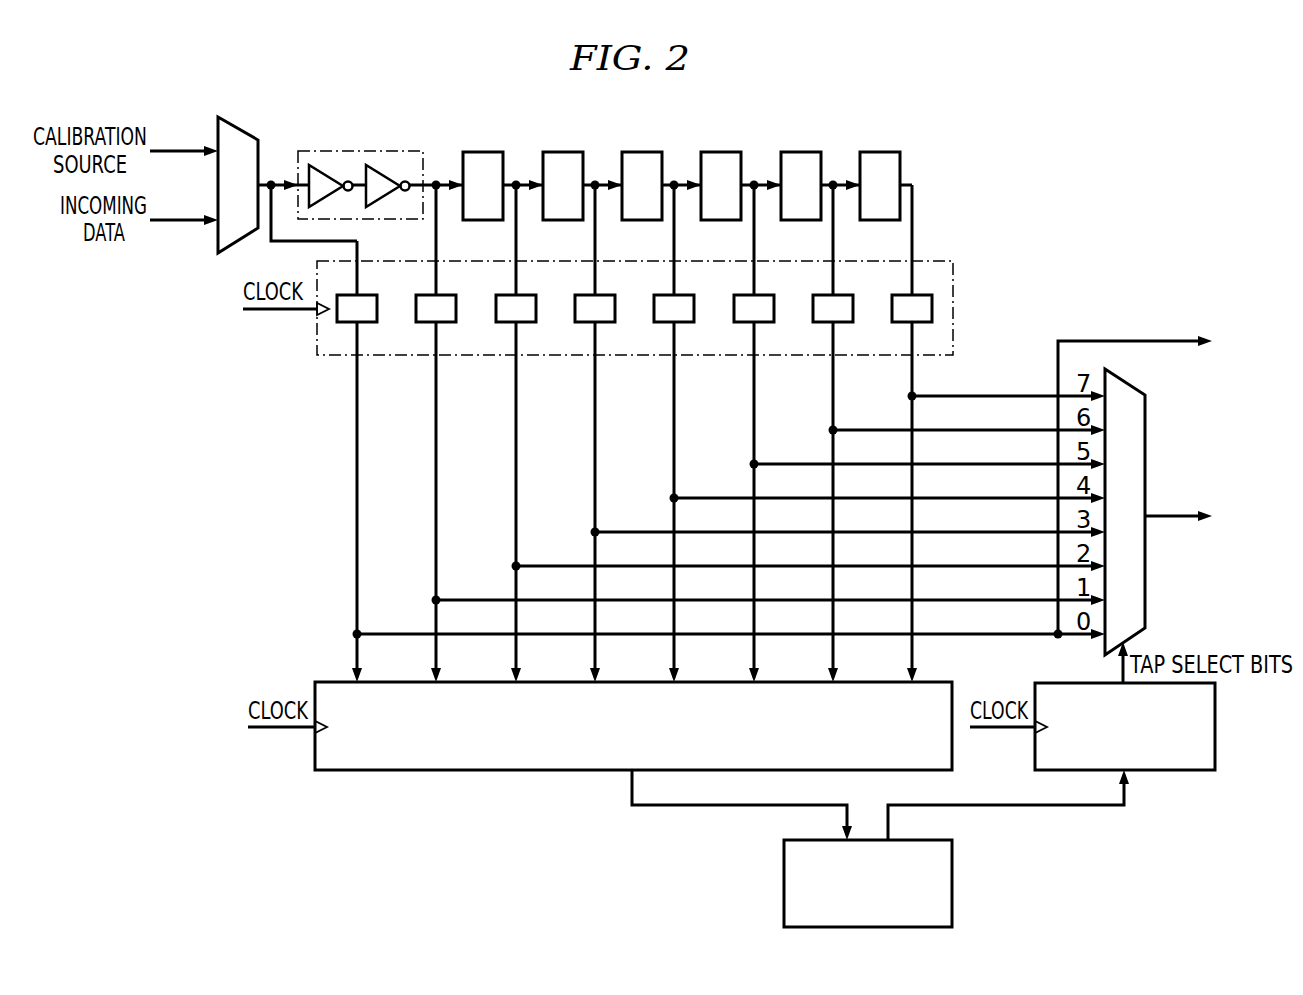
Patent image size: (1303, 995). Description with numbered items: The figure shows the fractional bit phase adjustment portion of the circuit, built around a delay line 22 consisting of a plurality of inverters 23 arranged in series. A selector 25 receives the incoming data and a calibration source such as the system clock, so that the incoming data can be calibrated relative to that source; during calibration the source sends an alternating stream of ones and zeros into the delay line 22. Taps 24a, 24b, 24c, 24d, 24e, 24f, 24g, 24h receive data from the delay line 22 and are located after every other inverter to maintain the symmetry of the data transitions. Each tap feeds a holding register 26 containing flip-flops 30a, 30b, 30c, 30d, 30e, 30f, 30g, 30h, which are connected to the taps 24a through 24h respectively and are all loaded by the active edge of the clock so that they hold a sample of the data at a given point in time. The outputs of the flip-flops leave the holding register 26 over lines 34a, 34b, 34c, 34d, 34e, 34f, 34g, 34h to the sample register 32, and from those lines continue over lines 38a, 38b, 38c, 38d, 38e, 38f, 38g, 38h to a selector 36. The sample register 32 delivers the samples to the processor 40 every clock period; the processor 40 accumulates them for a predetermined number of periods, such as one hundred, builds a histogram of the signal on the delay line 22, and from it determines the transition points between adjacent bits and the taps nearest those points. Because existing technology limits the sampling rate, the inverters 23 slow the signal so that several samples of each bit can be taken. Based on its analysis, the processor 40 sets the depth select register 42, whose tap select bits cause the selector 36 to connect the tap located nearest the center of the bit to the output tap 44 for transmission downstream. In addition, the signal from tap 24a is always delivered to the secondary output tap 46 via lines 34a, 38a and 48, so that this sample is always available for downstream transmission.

The delay line 22 is at (730, 108).
The inverters 23 is at (326, 168).
The tap 24a is at (359, 252).
The tap 24b is at (438, 252).
The tap 24c is at (518, 252).
The tap 24d is at (597, 252).
The tap 24e is at (676, 252).
The tap 24f is at (756, 252).
The tap 24g is at (835, 252).
The tap 24h is at (914, 252).
The selector 25 is at (242, 131).
The holding register 26 is at (953, 311).
The flip-flop 30a is at (367, 297).
The flip-flop 30b is at (446, 297).
The flip-flop 30c is at (526, 297).
The flip-flop 30d is at (605, 297).
The flip-flop 30e is at (684, 297).
The flip-flop 30f is at (764, 297).
The flip-flop 30g is at (843, 297).
The flip-flop 30h is at (922, 300).
The sample register 32 is at (504, 770).
The line 34a is at (359, 380).
The line 34b is at (438, 380).
The line 34c is at (518, 380).
The line 34d is at (597, 380).
The line 34e is at (676, 380).
The line 34f is at (756, 380).
The line 34g is at (835, 380).
The line 34h is at (914, 380).
The selector 36 is at (1145, 447).
The line 38a is at (985, 395).
The line 38b is at (985, 429).
The line 38c is at (985, 463).
The line 38d is at (985, 497).
The line 38e is at (985, 531).
The line 38f is at (985, 565).
The line 38g is at (985, 599).
The line 38h is at (985, 633).
The processor 40 is at (952, 884).
The depth select register 42 is at (1215, 725).
The output tap 44 is at (1188, 513).
The secondary output tap 46 is at (1189, 340).
The line 48 is at (1058, 357).